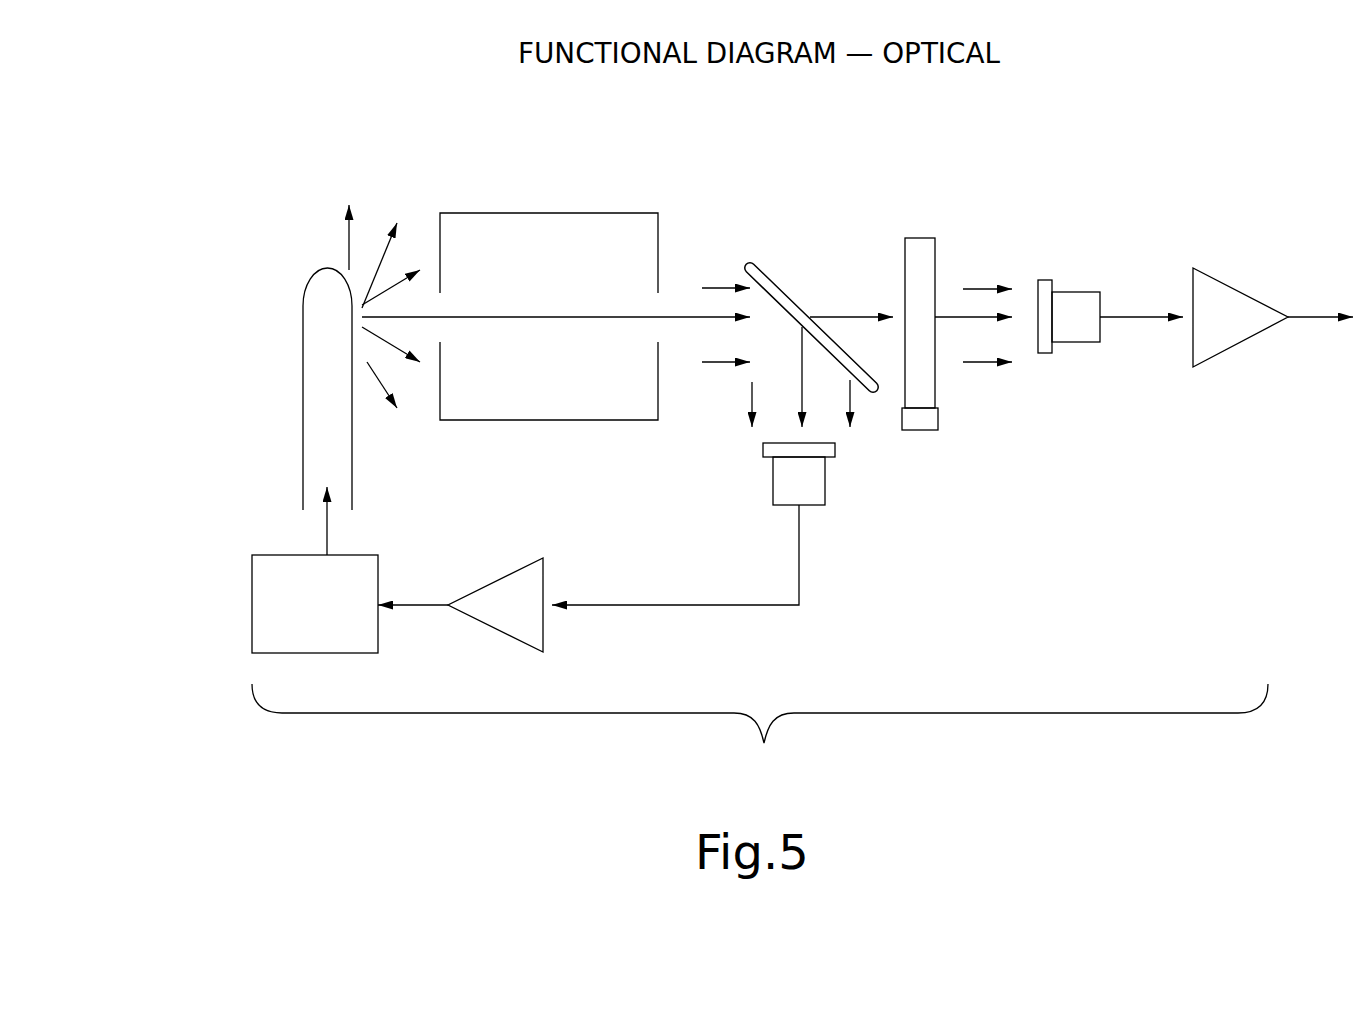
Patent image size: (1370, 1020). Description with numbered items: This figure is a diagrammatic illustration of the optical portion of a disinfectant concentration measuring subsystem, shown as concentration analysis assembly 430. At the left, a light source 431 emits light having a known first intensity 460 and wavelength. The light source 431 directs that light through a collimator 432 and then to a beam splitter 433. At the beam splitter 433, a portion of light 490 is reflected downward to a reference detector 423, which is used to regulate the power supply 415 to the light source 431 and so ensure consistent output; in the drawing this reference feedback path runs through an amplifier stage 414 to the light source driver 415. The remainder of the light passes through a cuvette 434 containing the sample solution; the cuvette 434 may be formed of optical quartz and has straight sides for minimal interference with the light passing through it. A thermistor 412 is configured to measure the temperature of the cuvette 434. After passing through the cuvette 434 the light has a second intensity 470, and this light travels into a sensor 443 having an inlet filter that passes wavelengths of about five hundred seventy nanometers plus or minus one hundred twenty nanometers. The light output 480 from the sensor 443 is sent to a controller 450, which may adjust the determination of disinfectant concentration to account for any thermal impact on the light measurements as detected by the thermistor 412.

The light source 431 is at (300, 407).
The first intensity 460 is at (368, 364).
The collimator 432 is at (538, 407).
The beam splitter 433 is at (787, 293).
The portion of light 490 is at (800, 347).
The cuvette 434 is at (935, 260).
The thermistor 412 is at (922, 430).
The second intensity 470 is at (972, 365).
The sensor 443 is at (1072, 292).
The light output 480 is at (1112, 320).
The controller 450 is at (1237, 288).
The reference detector 423 is at (785, 482).
The reference feedback amplifier 414 is at (543, 575).
The power supply 415 is at (262, 582).
The concentration analysis assembly 430 is at (764, 743).